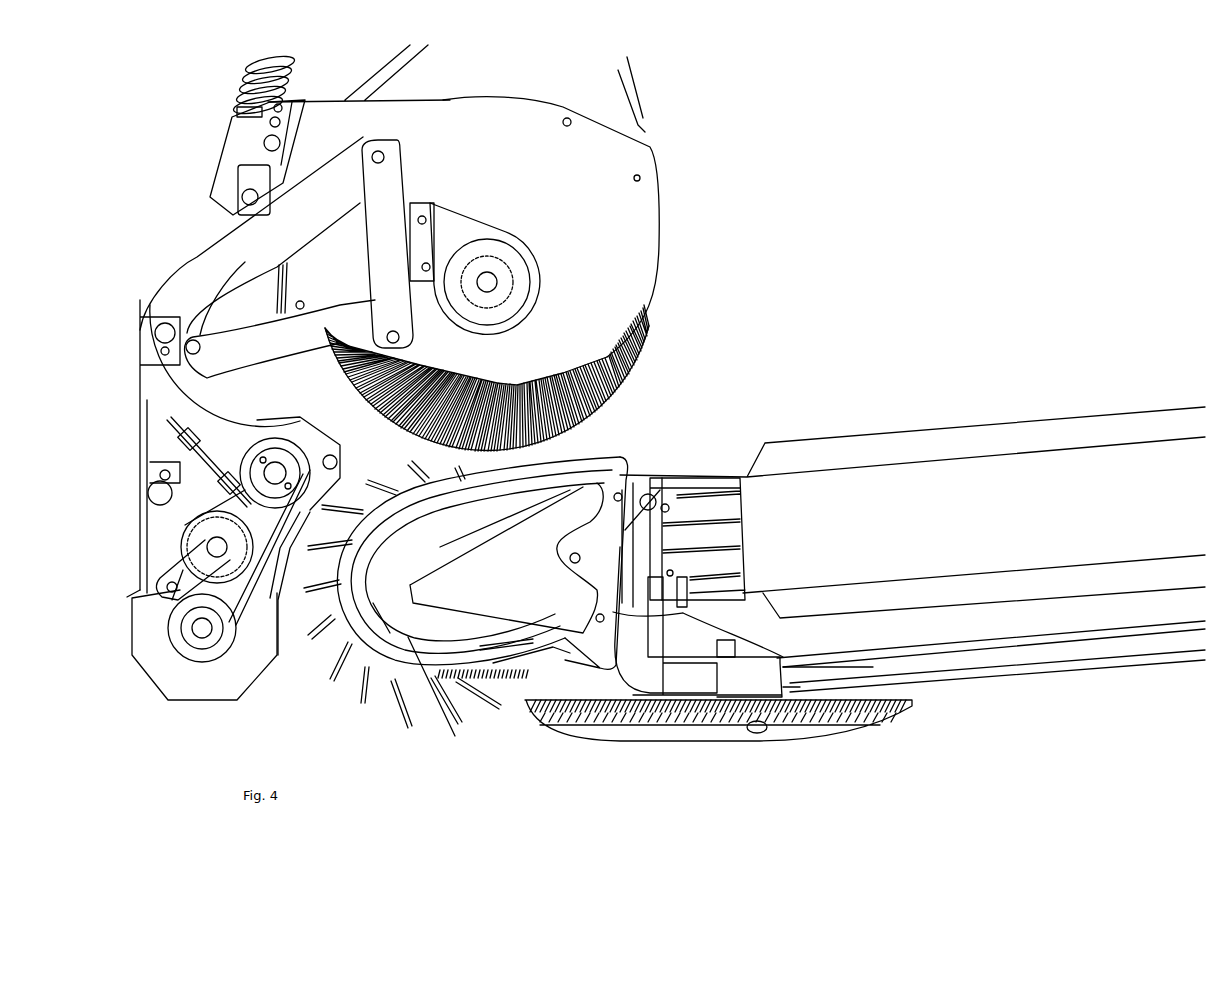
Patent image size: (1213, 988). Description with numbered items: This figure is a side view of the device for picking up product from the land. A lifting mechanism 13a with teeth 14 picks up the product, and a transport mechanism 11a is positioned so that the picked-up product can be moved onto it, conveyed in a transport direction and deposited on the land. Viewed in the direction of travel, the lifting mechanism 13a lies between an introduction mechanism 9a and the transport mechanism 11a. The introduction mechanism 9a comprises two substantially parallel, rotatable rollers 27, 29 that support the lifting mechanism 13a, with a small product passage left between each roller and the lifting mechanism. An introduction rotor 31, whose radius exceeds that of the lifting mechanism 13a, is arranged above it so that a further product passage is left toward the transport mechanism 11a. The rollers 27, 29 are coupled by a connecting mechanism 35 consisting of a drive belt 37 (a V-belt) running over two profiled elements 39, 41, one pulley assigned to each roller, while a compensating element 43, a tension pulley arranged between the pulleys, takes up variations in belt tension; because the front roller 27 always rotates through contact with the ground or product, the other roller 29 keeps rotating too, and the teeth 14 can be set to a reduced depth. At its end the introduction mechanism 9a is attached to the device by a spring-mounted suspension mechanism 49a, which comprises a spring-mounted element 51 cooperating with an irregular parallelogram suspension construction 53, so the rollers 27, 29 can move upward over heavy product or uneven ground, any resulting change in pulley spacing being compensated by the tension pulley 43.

The introduction mechanism 9a is at (129, 709).
The transport mechanism 11a is at (800, 462).
The lifting mechanism 13a is at (457, 740).
The teeth 14 is at (363, 703).
The roller 27 is at (217, 685).
The roller 29 is at (300, 427).
The introduction rotor 31 is at (655, 343).
The connecting mechanism 35 is at (192, 500).
The drive belt 37 is at (278, 652).
The profiled element 39 is at (190, 652).
The profiled element 41 is at (272, 452).
The compensating element 43 is at (200, 517).
The spring-mounted suspension mechanism 49a is at (170, 160).
The spring-mounted element 51 is at (227, 170).
The parallelogram suspension construction 53 is at (203, 260).